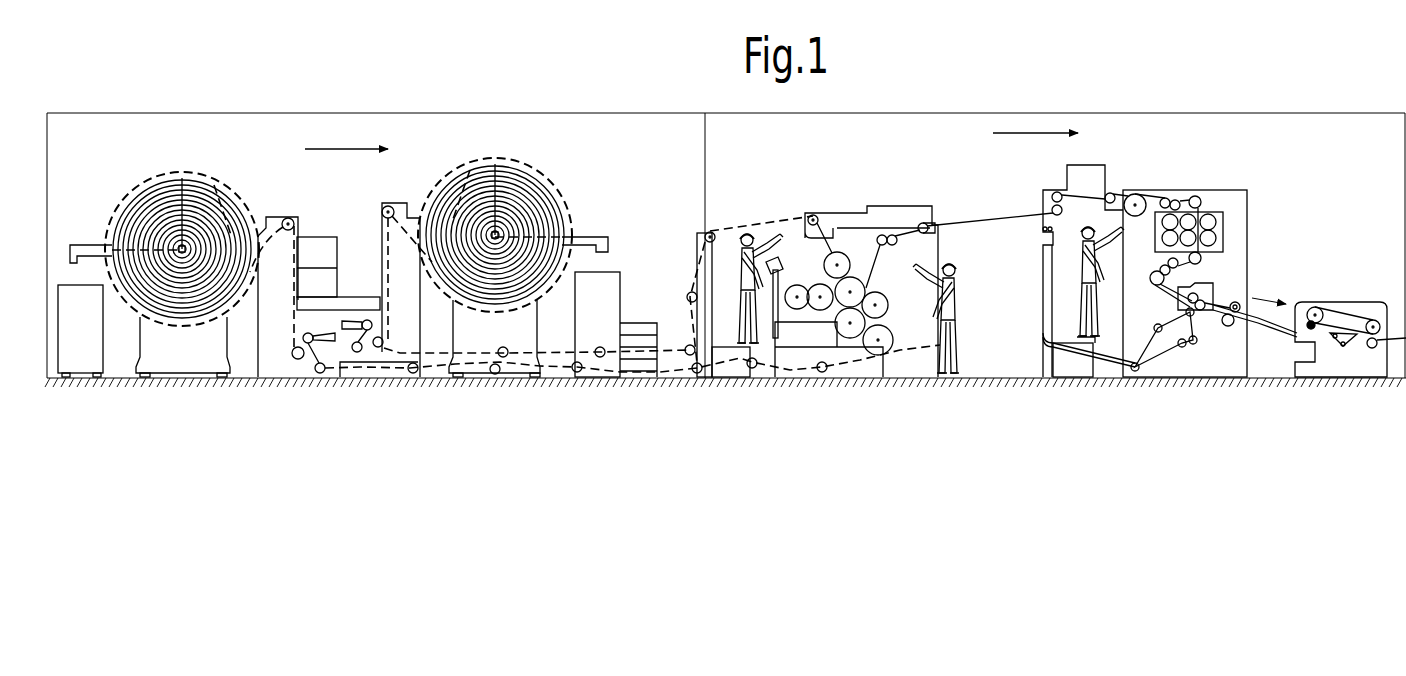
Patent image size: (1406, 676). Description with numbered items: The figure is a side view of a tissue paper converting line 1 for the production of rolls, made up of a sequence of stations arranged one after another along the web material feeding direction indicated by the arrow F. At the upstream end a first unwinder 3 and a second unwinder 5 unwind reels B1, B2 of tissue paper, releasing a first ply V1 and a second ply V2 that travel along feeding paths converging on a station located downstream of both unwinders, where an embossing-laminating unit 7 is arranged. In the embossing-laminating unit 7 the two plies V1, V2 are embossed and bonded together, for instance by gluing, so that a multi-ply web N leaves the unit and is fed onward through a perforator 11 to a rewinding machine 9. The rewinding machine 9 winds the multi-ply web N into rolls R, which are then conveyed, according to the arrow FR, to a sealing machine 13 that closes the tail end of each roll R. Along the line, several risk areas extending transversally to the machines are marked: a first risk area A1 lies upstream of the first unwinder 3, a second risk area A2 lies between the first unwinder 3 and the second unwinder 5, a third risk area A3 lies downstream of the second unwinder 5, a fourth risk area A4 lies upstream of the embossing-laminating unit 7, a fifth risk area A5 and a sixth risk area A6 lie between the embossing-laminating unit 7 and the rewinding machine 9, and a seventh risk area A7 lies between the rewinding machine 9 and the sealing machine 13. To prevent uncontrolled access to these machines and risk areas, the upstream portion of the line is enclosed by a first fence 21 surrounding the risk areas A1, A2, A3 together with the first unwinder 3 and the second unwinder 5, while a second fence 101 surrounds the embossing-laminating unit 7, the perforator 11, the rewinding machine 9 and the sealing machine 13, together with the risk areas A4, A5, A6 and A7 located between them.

The tissue paper converting line 1 is at (310, 399).
The first fence 21 is at (361, 107).
The second fence 101 is at (1162, 107).
The first unwinder 3 is at (148, 399).
The second unwinder 5 is at (486, 399).
The embossing-laminating unit 7 is at (809, 399).
The rewinding machine 9 is at (1213, 399).
The perforator 11 is at (1245, 251).
The sealing machine 13 is at (1363, 287).
The reel B1 is at (140, 173).
The reel B2 is at (571, 182).
The tissue paper ply V1 is at (305, 252).
The tissue paper ply V2 is at (390, 247).
The web material feeding direction F is at (340, 151).
The multi-ply web N is at (978, 216).
The rolls R is at (1235, 300).
The roll feeding direction FR is at (1255, 298).
The first risk area A1 is at (63, 280).
The second risk area A2 is at (358, 240).
The third risk area A3 is at (644, 281).
The fourth risk area A4 is at (753, 214).
The fifth risk area A5 is at (980, 289).
The sixth risk area A6 is at (1026, 268).
The seventh risk area A7 is at (1305, 253).